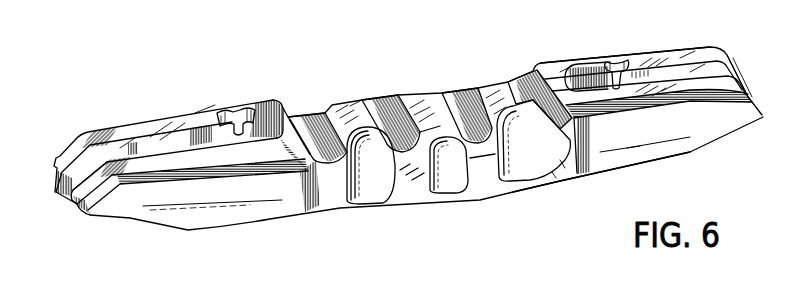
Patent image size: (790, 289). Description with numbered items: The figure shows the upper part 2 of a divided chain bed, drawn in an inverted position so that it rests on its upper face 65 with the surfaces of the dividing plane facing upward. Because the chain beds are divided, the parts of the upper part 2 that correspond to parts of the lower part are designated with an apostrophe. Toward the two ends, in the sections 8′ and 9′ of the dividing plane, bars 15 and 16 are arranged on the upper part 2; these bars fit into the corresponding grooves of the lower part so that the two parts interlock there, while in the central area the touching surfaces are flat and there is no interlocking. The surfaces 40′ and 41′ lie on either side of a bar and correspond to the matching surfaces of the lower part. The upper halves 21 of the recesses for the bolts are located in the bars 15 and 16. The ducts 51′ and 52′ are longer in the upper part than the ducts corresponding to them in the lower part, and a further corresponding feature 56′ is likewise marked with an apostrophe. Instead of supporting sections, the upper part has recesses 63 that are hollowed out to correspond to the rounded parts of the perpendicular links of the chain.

The upper part 2 is at (183, 236).
The bar 16 is at (138, 129).
The upper halves of the recesses for the bolts 21 is at (243, 117).
The duct 52′ is at (312, 126).
The bearing surface 56′ is at (347, 114).
The duct 51′ is at (384, 109).
The bar 15 is at (643, 51).
The surface 41′ is at (676, 92).
The section of the dividing plane 8′ is at (752, 102).
The section of the dividing plane 9′ is at (92, 198).
The surface 40′ is at (235, 156).
The recesses 63 is at (373, 176).
The upper face 65 is at (549, 183).